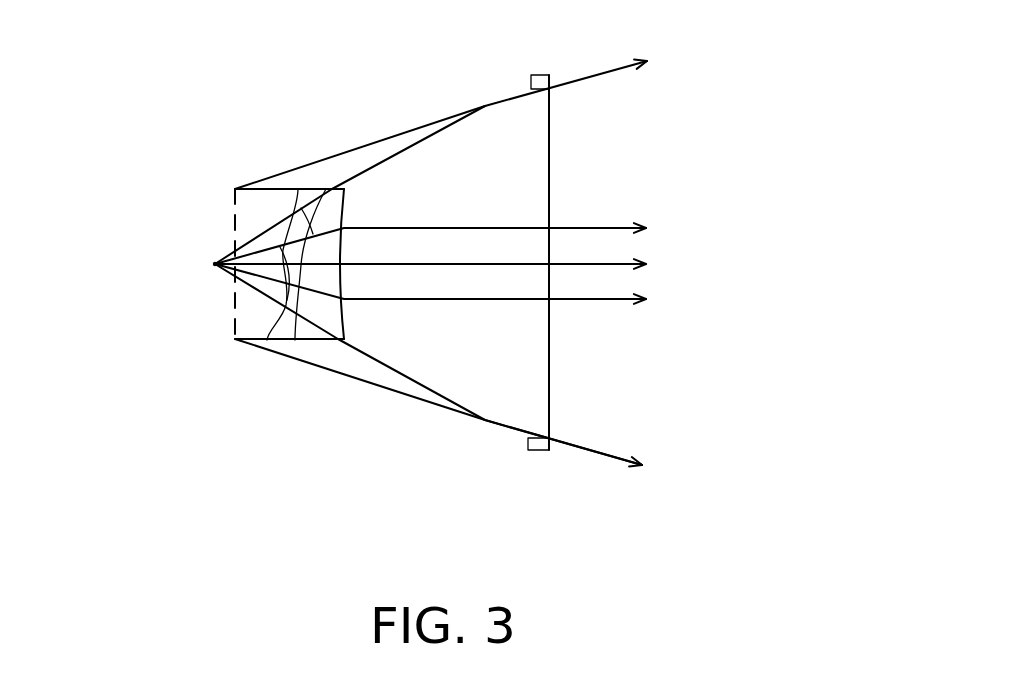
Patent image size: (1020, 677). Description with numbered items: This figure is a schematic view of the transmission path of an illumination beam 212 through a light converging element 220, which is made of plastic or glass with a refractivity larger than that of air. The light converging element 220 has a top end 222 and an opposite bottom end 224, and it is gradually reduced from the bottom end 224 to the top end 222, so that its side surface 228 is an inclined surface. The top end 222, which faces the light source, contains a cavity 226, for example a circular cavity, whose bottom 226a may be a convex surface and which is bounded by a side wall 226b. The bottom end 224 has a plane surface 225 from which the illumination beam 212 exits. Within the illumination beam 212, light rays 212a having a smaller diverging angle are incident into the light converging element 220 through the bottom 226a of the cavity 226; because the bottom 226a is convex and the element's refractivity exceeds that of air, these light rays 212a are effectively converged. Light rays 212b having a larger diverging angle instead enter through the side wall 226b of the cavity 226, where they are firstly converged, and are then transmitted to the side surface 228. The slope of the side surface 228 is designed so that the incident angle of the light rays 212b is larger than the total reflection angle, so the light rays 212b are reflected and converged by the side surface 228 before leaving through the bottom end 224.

The light converging element 220 is at (795, 559).
The illumination beam 212 is at (216, 264).
The light rays 212a is at (326, 189).
The light rays 212b is at (298, 189).
The top end 222 is at (231, 203).
The bottom end 224 is at (538, 452).
The plane surface 225 is at (552, 365).
The cavity 226 is at (258, 319).
The bottom of the cavity 226a is at (339, 312).
The side wall of the cavity 226b is at (277, 194).
The side surface 228 is at (428, 121).